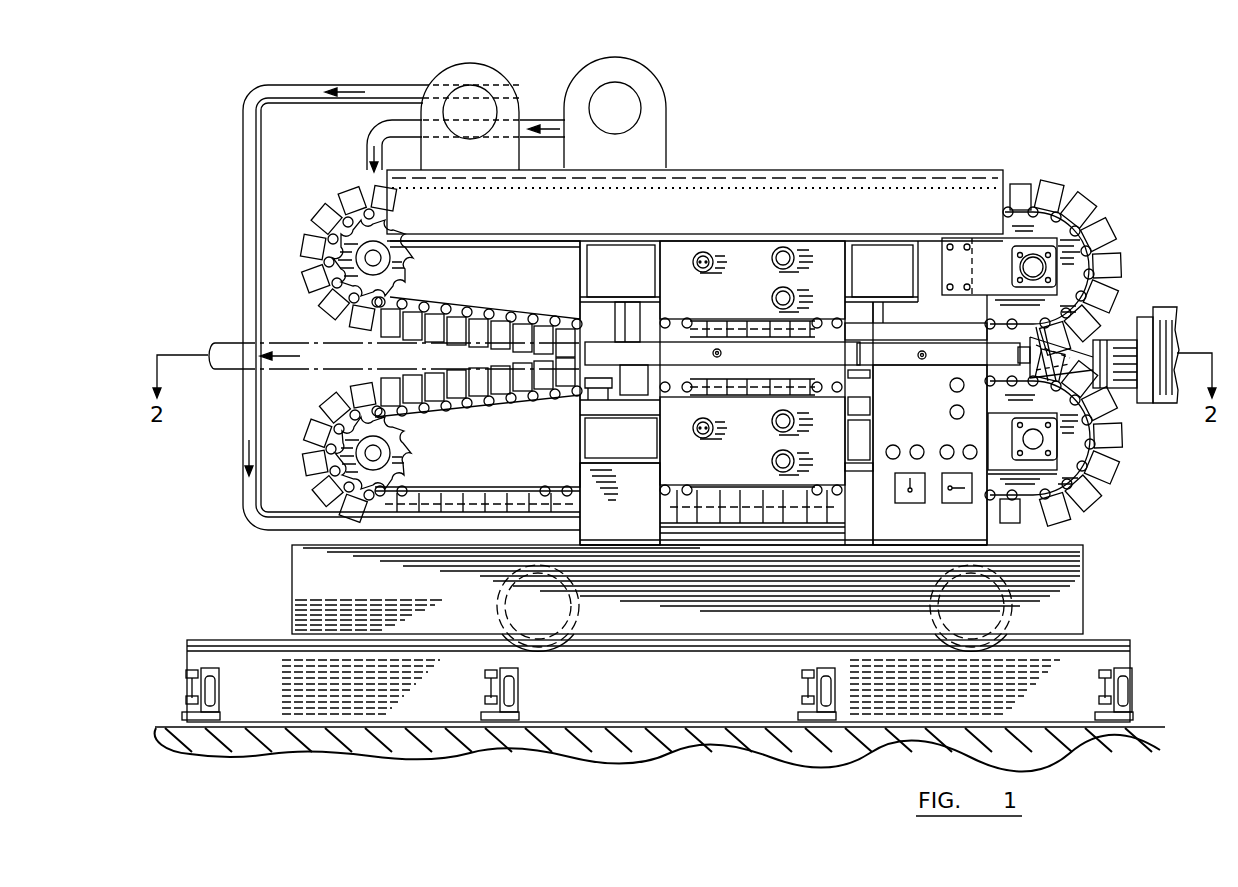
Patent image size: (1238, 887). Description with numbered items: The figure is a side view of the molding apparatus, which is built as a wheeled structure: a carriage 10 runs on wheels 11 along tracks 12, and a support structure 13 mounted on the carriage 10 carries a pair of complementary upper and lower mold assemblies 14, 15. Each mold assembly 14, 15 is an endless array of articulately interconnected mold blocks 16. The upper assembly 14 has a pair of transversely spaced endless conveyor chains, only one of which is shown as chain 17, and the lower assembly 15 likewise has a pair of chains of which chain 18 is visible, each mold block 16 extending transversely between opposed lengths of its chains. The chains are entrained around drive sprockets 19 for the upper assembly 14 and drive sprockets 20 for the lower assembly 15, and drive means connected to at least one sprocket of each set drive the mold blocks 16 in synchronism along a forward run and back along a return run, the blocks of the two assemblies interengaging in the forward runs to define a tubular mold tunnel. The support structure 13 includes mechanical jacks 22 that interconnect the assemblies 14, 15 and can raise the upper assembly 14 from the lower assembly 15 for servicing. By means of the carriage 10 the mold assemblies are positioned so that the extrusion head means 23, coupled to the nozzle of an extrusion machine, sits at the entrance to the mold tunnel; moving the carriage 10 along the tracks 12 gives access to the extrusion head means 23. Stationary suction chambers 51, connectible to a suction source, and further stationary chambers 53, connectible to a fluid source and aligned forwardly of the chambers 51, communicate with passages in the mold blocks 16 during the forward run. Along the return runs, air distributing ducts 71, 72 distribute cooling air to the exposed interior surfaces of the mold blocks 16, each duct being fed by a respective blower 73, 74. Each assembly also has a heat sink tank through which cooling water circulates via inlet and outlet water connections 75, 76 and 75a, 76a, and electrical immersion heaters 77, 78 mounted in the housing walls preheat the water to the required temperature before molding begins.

The carriage 10 is at (1084, 588).
The wheels 11 is at (550, 648).
The tracks 12 is at (259, 640).
The support structure 13 is at (868, 517).
The upper mold assembly 14 is at (485, 280).
The lower mold assembly 15 is at (477, 441).
The mold blocks 16 is at (320, 224).
The endless conveyor chain 17 is at (443, 299).
The endless conveyor chain 18 is at (450, 408).
The drive sprockets 19 is at (1068, 287).
The drive sprockets 20 is at (1072, 454).
The mechanical jacks 22 is at (645, 315).
The extrusion head means 23 is at (1110, 330).
The stationary suction chambers 51 is at (938, 355).
The stationary chambers 53 is at (722, 355).
The air distributing duct 71 is at (790, 188).
The air distributing duct 72 is at (292, 536).
The blower 73 is at (658, 97).
The blower 74 is at (500, 92).
The inlet water connection 75 is at (772, 300).
The outlet water connection 76 is at (772, 261).
The electrical immersion heater 77 is at (695, 272).
The electrical immersion heater 78 is at (698, 437).
The inlet water connection 75a is at (777, 455).
The outlet water connection 76a is at (777, 417).